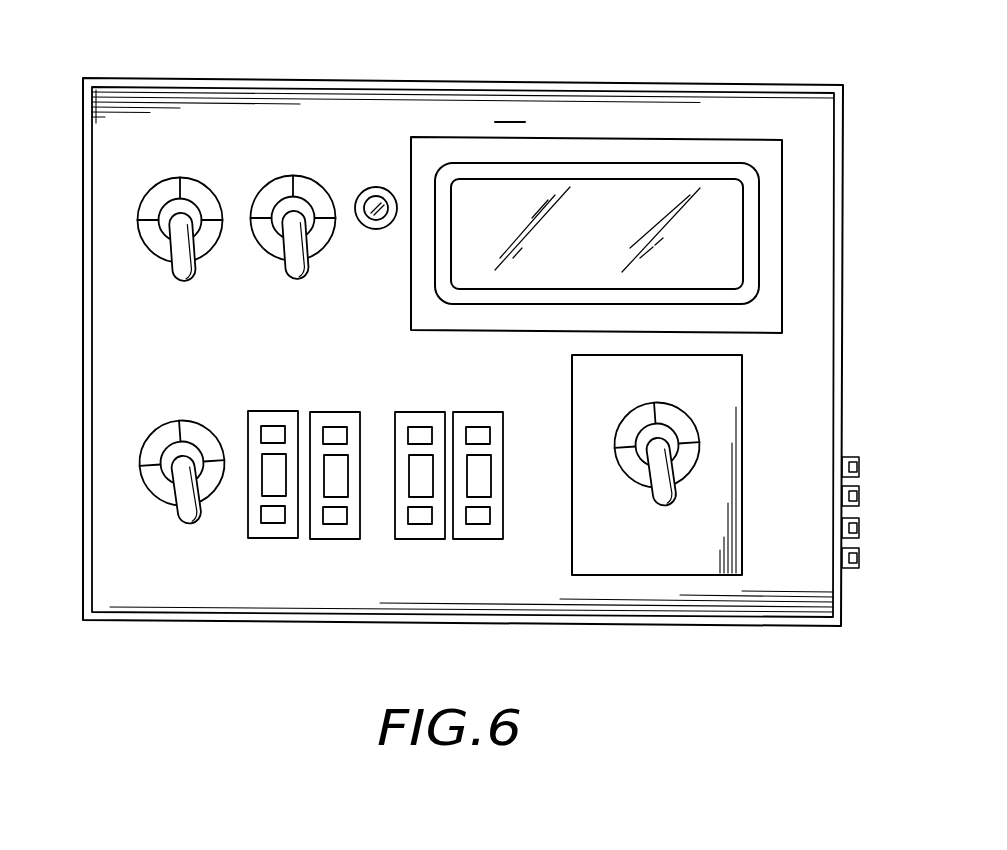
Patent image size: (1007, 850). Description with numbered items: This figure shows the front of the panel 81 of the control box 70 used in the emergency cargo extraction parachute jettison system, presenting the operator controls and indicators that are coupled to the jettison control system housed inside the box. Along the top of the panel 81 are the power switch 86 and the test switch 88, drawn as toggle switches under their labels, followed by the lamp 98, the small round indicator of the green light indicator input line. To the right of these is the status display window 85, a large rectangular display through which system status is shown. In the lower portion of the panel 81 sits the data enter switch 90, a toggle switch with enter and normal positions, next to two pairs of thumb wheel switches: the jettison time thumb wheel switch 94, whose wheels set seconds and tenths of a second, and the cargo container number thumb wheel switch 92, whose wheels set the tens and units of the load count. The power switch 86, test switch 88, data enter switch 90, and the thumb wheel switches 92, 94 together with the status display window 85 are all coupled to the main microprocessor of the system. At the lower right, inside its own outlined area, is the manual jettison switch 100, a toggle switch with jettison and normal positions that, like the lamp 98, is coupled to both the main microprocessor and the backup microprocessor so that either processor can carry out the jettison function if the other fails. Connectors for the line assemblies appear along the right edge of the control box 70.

The control box 70 is at (317, 82).
The power switch 86 is at (146, 194).
The test switch 88 is at (261, 190).
The lamp 98 is at (391, 189).
The panel 81 is at (508, 120).
The status display window 85 is at (655, 137).
The data enter switch 90 is at (139, 458).
The jettison time thumb wheel switch 94 is at (255, 538).
The cargo container number thumb wheel switch 92 is at (503, 522).
The manual jettison switch 100 is at (742, 398).